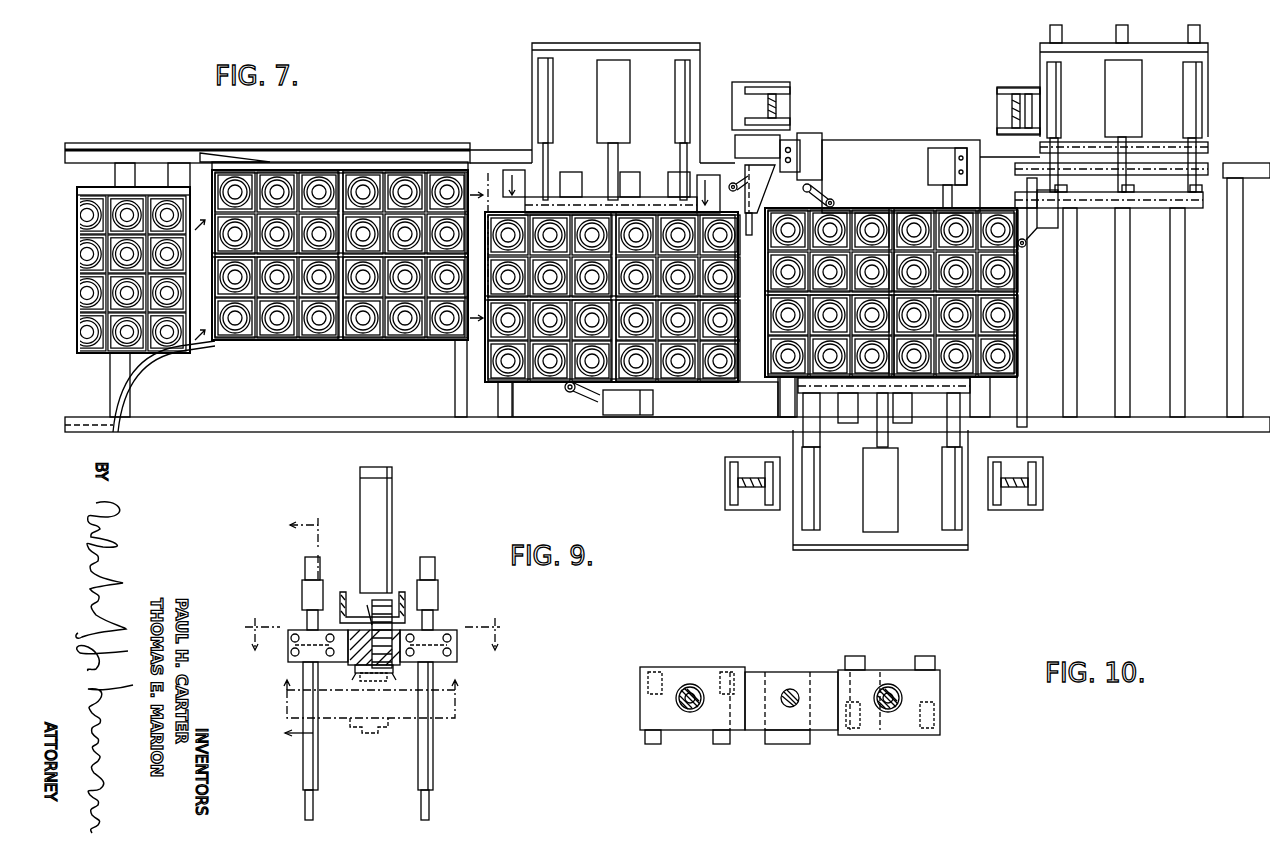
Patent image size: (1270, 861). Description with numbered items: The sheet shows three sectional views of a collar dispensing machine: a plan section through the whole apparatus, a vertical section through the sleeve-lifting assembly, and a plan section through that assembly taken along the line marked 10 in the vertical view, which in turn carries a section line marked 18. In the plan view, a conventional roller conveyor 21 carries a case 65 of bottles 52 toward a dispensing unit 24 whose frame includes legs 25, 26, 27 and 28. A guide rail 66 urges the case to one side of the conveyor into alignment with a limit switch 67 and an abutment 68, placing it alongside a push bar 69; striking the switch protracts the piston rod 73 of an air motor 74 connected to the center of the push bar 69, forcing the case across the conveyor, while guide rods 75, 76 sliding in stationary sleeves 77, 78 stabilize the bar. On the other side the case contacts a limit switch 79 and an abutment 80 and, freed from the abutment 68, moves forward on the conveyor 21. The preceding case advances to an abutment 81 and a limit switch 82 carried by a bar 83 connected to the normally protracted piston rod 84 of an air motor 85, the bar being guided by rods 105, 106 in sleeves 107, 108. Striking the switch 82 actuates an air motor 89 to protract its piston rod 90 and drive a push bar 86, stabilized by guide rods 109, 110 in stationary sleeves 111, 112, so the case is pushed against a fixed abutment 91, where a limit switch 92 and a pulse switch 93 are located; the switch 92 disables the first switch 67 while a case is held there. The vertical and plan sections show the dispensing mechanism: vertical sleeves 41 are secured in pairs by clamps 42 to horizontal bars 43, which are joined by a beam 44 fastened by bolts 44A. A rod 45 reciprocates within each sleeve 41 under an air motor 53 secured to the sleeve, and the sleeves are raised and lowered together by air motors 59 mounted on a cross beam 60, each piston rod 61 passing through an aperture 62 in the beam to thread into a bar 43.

In FIG. 7, the roller conveyor 21 is at (152, 142).
In FIG. 7, the dispensing unit 24 is at (917, 564).
In FIG. 7, the leg 25 is at (757, 510).
In FIG. 7, the leg 26 is at (1010, 510).
In FIG. 7, the leg 27 is at (760, 82).
In FIG. 7, the leg 28 is at (1012, 87).
In FIG. 7, the bottles 52 is at (250, 328).
In FIG. 7, the case 65 is at (90, 355).
In FIG. 7, the guide rail 66 is at (210, 360).
In FIG. 7, the limit switch 67 is at (738, 160).
In FIG. 7, the abutment 68 is at (729, 188).
In FIG. 7, the push bar 69 is at (648, 205).
In FIG. 7, the piston rod 73 is at (619, 160).
In FIG. 7, the air motor 74 is at (597, 108).
In FIG. 7, the guide rod 75 is at (549, 160).
In FIG. 7, the guide rod 76 is at (680, 164).
In FIG. 7, the stationary sleeve 77 is at (553, 80).
In FIG. 7, the stationary sleeve 78 is at (675, 88).
In FIG. 7, the limit switch 79 is at (585, 398).
In FIG. 7, the abutment 80 is at (700, 408).
In FIG. 7, the abutment 81 is at (1037, 210).
In FIG. 7, the limit switch 82 is at (1027, 246).
In FIG. 7, the bar 83 is at (1110, 208).
In FIG. 7, the piston rod 84 is at (1130, 150).
In FIG. 7, the air motor 85 is at (1142, 98).
In FIG. 7, the push bar 86 is at (928, 393).
In FIG. 7, the air motor 89 is at (880, 490).
In FIG. 7, the piston rod 90 is at (878, 430).
In FIG. 7, the fixed abutment 91 is at (873, 208).
In FIG. 7, the limit switch 92 is at (815, 192).
In FIG. 7, the pulse switch 93 is at (928, 180).
In FIG. 7, the guide rod 105 is at (1064, 34).
In FIG. 7, the guide rod 106 is at (1202, 40).
In FIG. 7, the sleeve 107 is at (1061, 108).
In FIG. 7, the sleeve 108 is at (1202, 98).
In FIG. 7, the guide rod 109 is at (820, 438).
In FIG. 7, the guide rod 110 is at (947, 443).
In FIG. 7, the stationary sleeve 111 is at (818, 488).
In FIG. 7, the stationary sleeve 112 is at (948, 500).
In FIG. 9, the air motor 59 is at (392, 498).
In FIG. 9, the cross beam 60 is at (342, 590).
In FIG. 9, the piston rod 61 is at (385, 595).
In FIG. 10, the piston rod 61 is at (792, 688).
In FIG. 9, the aperture 62 is at (366, 595).
In FIG. 9, the air motor 53 is at (302, 592).
In FIG. 9, the clamp 42 is at (457, 648).
In FIG. 10, the clamp 42 is at (684, 670).
In FIG. 9, the horizontal bar 43 is at (352, 666).
In FIG. 10, the horizontal bar 43 is at (938, 692).
In FIG. 9, the beam 44 is at (345, 738).
In FIG. 9, the bolts 44A is at (362, 686).
In FIG. 9, the vertical sleeve 41 is at (303, 765).
In FIG. 10, the vertical sleeve 41 is at (694, 686).
In FIG. 9, the rod 45 is at (313, 803).
In FIG. 10, the rod 45 is at (690, 712).
In FIG. 9, the section line 18 is at (287, 629).
In FIG. 9, the section line 10 is at (373, 654).